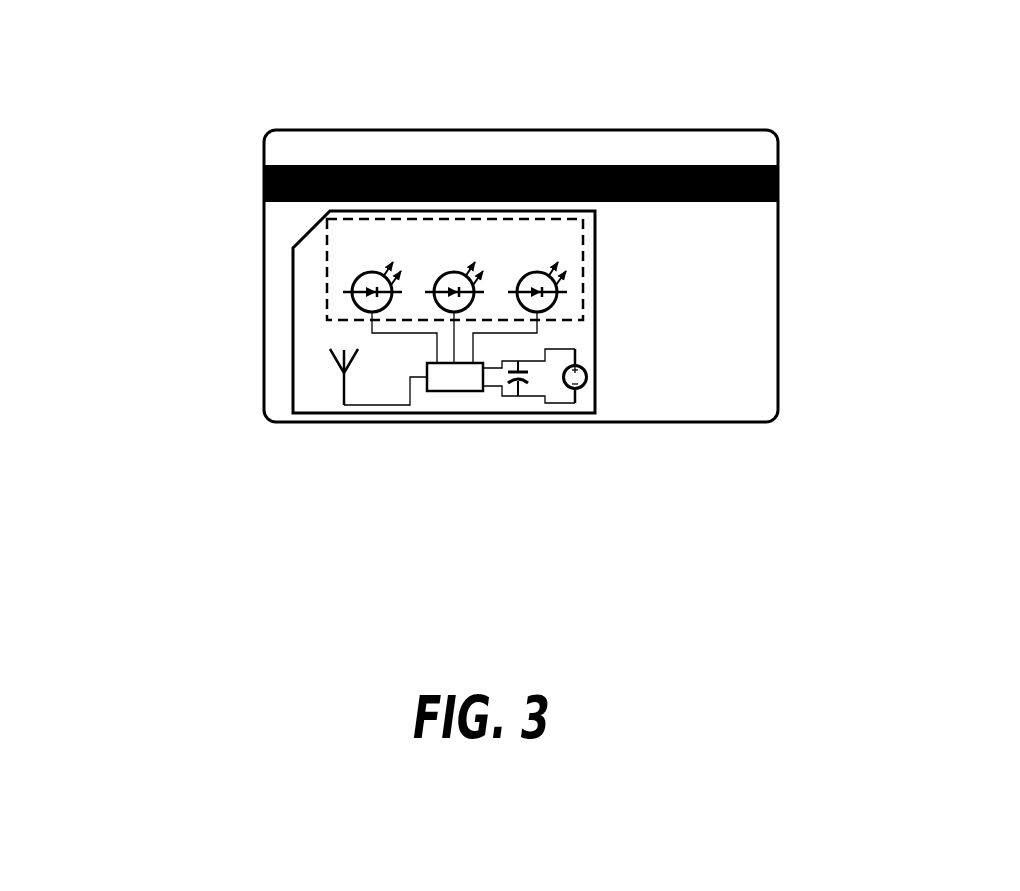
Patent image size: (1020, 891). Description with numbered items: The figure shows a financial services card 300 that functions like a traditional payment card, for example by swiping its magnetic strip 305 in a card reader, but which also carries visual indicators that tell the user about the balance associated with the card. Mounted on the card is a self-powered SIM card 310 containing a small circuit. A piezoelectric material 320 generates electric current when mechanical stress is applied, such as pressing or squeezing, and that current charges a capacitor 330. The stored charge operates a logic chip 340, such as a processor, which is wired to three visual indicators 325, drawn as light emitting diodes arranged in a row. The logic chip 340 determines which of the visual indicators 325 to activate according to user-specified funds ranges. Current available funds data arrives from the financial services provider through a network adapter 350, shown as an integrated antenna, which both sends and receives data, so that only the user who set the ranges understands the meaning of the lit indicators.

The financial services card 300 is at (456, 226).
The magnetic strip 305 is at (581, 131).
The self-powered SIM card 310 is at (303, 312).
The visual indicators 325 is at (497, 246).
The network adapter 350 is at (285, 416).
The logic chip 340 is at (355, 480).
The capacitor 330 is at (618, 474).
The piezoelectric material 320 is at (709, 433).